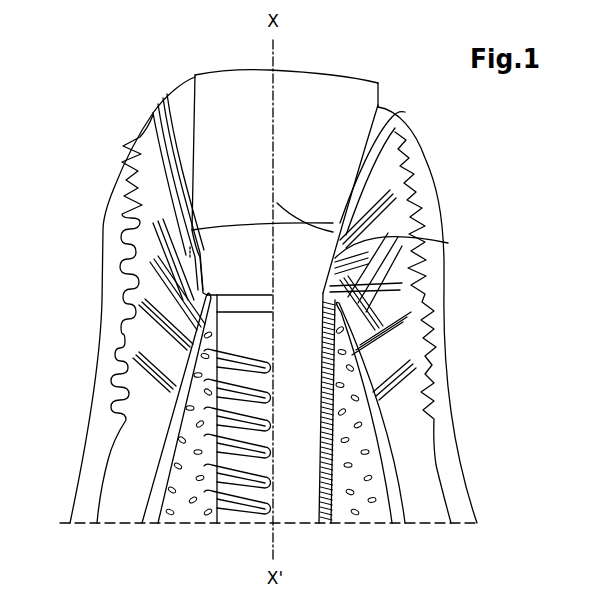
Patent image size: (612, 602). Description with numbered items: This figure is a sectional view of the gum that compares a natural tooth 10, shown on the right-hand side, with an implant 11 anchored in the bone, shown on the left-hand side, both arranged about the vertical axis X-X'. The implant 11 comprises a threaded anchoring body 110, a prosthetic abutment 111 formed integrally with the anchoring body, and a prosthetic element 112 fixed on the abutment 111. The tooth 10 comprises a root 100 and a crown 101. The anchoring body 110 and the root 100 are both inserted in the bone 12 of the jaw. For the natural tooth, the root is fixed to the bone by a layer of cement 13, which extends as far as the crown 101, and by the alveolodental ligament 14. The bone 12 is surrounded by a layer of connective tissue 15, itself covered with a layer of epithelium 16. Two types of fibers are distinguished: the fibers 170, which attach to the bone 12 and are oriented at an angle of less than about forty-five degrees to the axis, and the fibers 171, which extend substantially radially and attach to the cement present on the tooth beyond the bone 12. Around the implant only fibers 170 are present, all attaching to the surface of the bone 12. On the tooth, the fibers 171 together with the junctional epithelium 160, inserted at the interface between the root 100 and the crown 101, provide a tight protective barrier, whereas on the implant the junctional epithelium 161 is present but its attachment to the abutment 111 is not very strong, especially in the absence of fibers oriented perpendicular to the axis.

The natural tooth 10 is at (306, 60).
The implant 11 is at (217, 62).
The prosthetic abutment 111 is at (242, 95).
The prosthetic element 112 is at (177, 87).
The crown 101 is at (350, 100).
The root 100 is at (296, 510).
The threaded anchoring body 110 is at (239, 520).
The bone 12 is at (190, 422).
The layer of cement 13 is at (335, 440).
The alveolodental ligament 14 is at (335, 475).
The layer of connective tissue 15 is at (118, 492).
The layer of epithelium 16 is at (436, 343).
The junctional epithelium 160 is at (390, 207).
The junctional epithelium 161 is at (175, 205).
The fibers 170 is at (162, 292).
The fibers 171 is at (448, 243).